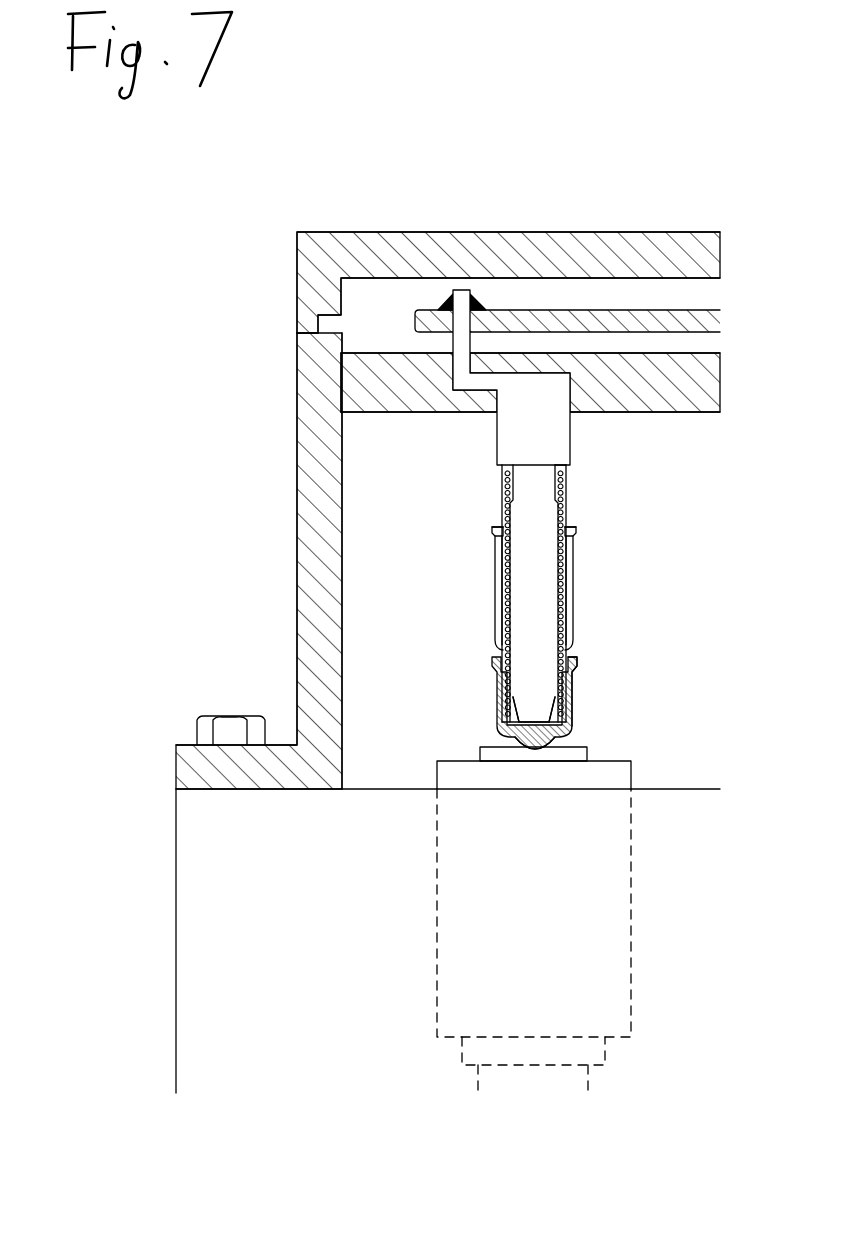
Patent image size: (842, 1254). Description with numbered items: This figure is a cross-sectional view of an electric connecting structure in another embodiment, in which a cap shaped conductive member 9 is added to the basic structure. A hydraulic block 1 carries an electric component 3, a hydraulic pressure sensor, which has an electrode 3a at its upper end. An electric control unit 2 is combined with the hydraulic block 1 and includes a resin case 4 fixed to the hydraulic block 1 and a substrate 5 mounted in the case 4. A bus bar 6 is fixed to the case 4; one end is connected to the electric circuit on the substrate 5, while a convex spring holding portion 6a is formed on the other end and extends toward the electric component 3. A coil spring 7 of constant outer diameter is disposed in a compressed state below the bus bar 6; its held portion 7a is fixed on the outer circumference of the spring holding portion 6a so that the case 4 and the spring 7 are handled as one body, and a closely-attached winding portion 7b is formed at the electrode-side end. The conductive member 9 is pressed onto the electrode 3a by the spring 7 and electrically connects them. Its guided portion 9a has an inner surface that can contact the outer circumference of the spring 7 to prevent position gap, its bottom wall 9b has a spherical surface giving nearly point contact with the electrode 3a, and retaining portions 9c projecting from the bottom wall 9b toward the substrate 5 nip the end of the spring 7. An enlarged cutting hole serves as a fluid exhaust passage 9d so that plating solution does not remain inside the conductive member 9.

The hydraulic block 1 is at (180, 958).
The electric control unit 2 is at (294, 500).
The electric component 3 is at (615, 777).
The electrode 3a is at (582, 742).
The case 4 is at (325, 380).
The substrate 5 is at (541, 318).
The bus bar 6 is at (515, 428).
The spring holding portion 6a is at (536, 516).
The spring 7 is at (566, 597).
The held portion 7a is at (570, 477).
The closely-attached winding portion 7b is at (497, 673).
The conductive member 9 is at (486, 615).
The guided portion 9a is at (490, 553).
The bottom wall 9b is at (515, 747).
The retaining portion 9c is at (575, 685).
The fluid exhaust passage 9d is at (568, 565).